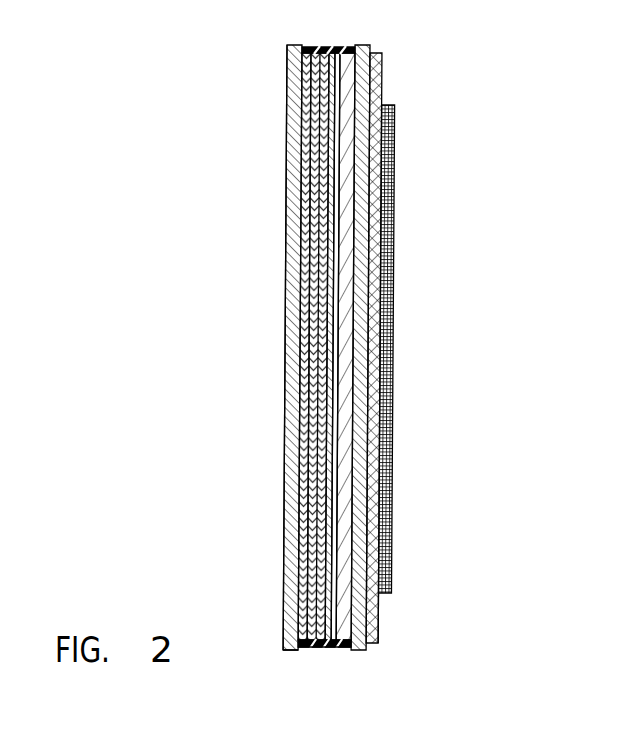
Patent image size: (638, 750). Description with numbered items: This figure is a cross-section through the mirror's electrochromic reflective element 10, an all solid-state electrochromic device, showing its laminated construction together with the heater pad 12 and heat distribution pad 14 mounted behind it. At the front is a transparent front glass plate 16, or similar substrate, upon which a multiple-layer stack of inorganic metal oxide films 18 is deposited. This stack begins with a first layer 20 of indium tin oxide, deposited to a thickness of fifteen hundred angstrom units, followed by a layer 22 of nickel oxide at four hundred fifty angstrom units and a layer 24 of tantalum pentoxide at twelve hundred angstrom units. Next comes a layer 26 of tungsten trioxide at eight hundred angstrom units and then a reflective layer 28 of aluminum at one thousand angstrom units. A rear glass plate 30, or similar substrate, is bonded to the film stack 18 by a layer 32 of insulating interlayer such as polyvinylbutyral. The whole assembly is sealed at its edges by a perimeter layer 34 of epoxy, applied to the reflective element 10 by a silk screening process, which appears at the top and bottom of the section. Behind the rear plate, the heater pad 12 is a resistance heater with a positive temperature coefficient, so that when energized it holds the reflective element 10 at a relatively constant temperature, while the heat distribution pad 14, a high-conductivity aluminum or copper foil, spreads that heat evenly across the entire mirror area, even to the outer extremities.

The electrochromic reflective element 10 is at (285, 92).
The heater pad 12 is at (398, 197).
The heat distribution pad 14 is at (378, 602).
The transparent front glass plate 16 is at (290, 652).
The multiple-layer stack of inorganic metal oxide films 18 is at (330, 660).
The first layer of indium tin oxide 20 is at (303, 612).
The layer of NiO 22 is at (310, 575).
The layer of Ta2O5 24 is at (317, 547).
The layer of WO3 26 is at (330, 423).
The reflective layer of aluminum 28 is at (343, 365).
The rear glass plate 30 is at (367, 44).
The layer of insulating interlayer 32 is at (347, 73).
The perimeter layer of epoxy 34 is at (333, 46).